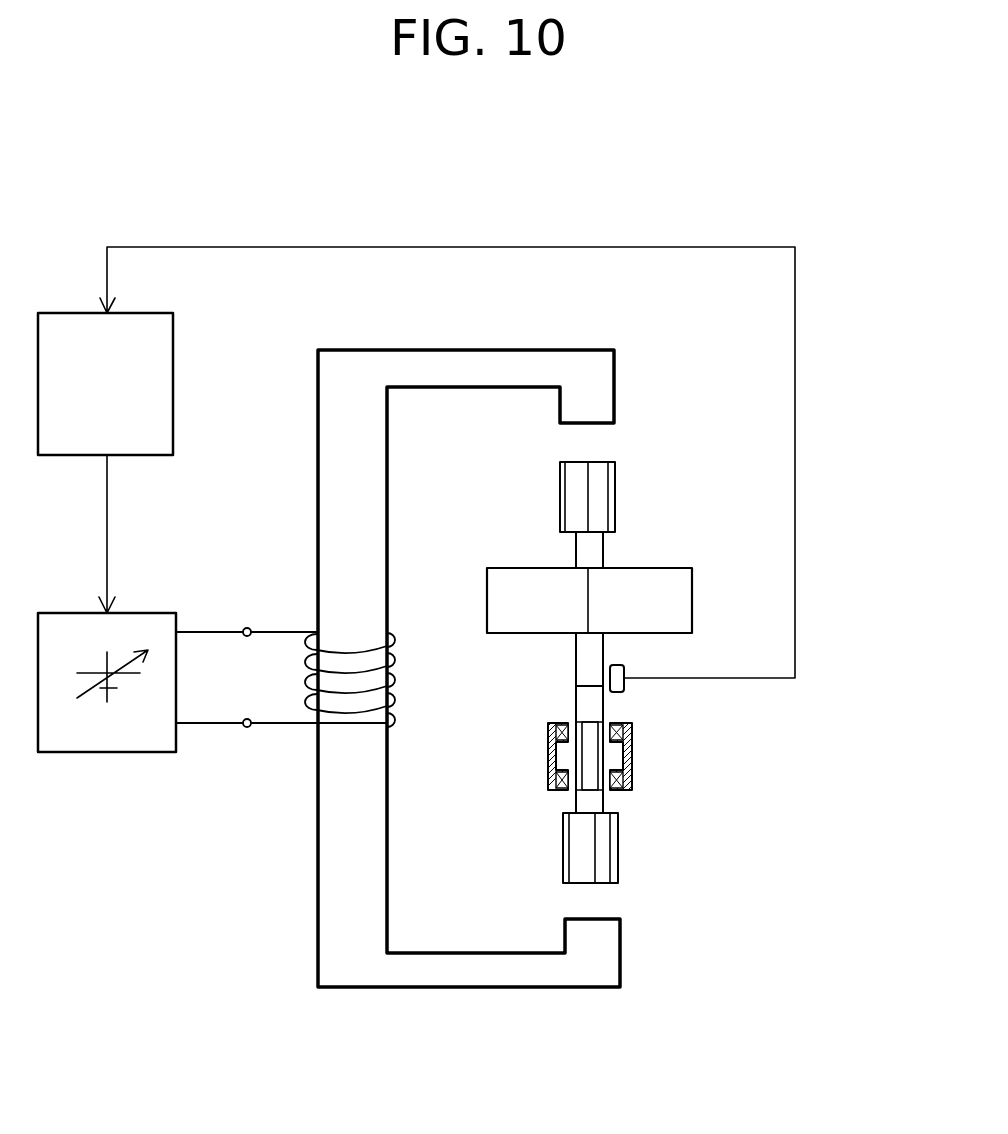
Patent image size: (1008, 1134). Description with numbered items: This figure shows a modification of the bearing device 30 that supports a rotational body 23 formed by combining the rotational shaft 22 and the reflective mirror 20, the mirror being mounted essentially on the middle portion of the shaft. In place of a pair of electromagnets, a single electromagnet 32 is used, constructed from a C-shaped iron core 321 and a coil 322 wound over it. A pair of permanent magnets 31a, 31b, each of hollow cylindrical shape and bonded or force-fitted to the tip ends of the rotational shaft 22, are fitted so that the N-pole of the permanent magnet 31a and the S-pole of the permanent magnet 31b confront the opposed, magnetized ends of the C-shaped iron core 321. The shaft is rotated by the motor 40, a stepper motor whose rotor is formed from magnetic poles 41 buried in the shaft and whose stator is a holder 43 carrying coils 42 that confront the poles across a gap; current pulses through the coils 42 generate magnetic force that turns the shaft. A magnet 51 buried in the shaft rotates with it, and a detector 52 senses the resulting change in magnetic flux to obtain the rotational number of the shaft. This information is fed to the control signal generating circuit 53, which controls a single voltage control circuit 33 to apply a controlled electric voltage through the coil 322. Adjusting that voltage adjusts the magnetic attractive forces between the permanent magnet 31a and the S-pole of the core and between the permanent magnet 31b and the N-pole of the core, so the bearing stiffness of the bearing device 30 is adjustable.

The reflective mirror 20 is at (635, 568).
The rotational shaft 22 is at (585, 550).
The rotational body 23 is at (816, 588).
The bearing device 30 is at (329, 634).
The permanent magnet 31a is at (603, 495).
The permanent magnet 31b is at (605, 852).
The electromagnet 32 is at (398, 668).
The C-shaped iron core 321 is at (320, 848).
The coil 322 is at (280, 727).
The voltage control circuit 33 is at (135, 623).
The motor 40 is at (655, 758).
The magnetic poles 41 is at (590, 728).
The coils 42 is at (613, 792).
The holder 43 is at (632, 745).
The magnet 51 is at (592, 675).
The detector 52 is at (627, 672).
The control signal generating circuit 53 is at (158, 363).